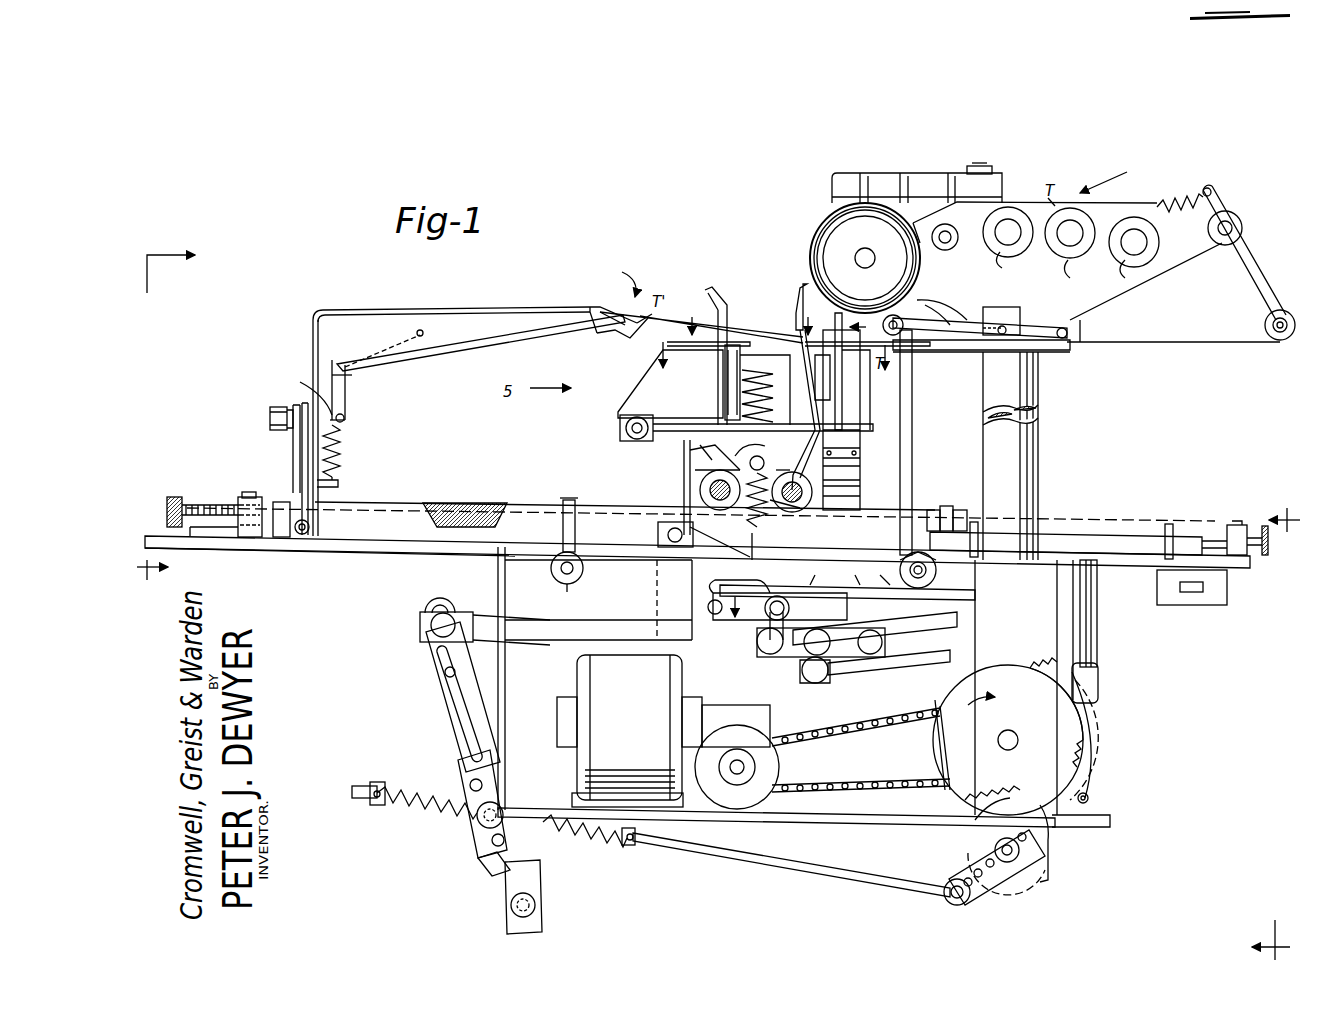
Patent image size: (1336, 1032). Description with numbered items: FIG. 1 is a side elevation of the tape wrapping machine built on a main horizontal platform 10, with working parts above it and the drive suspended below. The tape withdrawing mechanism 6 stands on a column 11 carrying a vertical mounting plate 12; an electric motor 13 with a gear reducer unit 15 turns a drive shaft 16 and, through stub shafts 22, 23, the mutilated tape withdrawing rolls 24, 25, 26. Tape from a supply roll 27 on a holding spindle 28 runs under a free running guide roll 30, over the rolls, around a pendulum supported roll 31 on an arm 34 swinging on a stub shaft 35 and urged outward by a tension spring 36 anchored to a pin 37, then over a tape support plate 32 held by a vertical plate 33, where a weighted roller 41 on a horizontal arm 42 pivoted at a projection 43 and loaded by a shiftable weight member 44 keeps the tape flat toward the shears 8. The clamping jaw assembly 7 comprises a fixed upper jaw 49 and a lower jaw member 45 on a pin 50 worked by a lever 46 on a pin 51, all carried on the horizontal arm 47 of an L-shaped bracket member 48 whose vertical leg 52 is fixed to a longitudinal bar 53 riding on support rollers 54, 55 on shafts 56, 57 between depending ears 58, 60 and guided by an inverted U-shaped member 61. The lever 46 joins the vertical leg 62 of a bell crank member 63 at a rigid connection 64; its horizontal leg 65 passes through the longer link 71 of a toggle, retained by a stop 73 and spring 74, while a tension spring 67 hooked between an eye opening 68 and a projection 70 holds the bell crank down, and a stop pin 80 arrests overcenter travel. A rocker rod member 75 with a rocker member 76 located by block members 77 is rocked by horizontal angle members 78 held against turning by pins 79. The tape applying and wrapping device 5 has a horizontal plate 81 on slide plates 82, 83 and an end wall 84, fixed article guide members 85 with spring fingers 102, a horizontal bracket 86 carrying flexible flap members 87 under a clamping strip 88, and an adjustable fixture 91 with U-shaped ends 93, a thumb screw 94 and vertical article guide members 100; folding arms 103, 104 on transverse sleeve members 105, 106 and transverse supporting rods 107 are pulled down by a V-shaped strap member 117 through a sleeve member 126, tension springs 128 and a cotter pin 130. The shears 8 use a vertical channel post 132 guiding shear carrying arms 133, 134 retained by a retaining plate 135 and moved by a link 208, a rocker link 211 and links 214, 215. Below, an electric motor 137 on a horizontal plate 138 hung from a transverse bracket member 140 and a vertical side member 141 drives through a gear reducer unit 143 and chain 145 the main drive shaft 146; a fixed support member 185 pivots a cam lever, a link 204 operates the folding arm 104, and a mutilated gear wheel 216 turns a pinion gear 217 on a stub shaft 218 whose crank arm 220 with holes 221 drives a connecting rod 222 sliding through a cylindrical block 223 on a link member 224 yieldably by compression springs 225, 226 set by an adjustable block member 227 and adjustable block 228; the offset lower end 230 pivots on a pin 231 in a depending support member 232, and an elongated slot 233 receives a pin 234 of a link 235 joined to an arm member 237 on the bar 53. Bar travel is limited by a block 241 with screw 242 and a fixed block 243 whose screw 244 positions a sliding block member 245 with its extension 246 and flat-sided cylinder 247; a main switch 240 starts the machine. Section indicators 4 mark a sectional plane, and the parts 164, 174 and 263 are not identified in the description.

The section line 4- 4 is at (1281, 515).
The section line 5- 5 is at (171, 264).
The view arrow 6 is at (906, 248).
The view arrow 7 is at (753, 321).
The view arrow 8 is at (863, 329).
The bed plate 10 is at (285, 546).
The column 11 is at (1030, 438).
The frame plate 12 is at (1125, 290).
The roll frame 13 is at (832, 187).
The cap 15 is at (1000, 190).
The roller 16 is at (1012, 236).
The roller 22 is at (1072, 238).
The roller 23 is at (1138, 244).
The roller shaft 24 is at (1006, 266).
The roller shaft 25 is at (1074, 274).
The roller shaft 26 is at (1115, 273).
The supply roll 27 is at (848, 232).
The roll spindle 28 is at (858, 257).
The guide roller 30 is at (950, 226).
The pulley 31 is at (1264, 325).
The plate 32 is at (970, 358).
The post 33 is at (912, 447).
The arm 34 is at (1248, 262).
The pulley 35 is at (1243, 228).
The spring anchor 36 is at (1200, 192).
The spring 37 is at (1157, 205).
The pivot 41 is at (902, 317).
The guide 42 is at (945, 310).
The bar pivot 43 is at (1068, 331).
The block 44 is at (1020, 314).
The tape guide 45 is at (628, 338).
The arm 46 is at (560, 312).
The arm 47 is at (463, 309).
The post 48 is at (313, 316).
The guide 49 is at (595, 308).
The link 50 is at (600, 330).
The pivot 51 is at (422, 336).
The post 52 is at (313, 365).
The plate 53 is at (393, 548).
The shaft 54 is at (576, 578).
The bracket 55 is at (936, 568).
The hub 56 is at (560, 578).
The pulley 57 is at (936, 575).
The pulley 58 is at (551, 570).
The shaft 60 is at (936, 580).
The post 61 is at (565, 500).
The post 62 is at (346, 392).
The bar 63 is at (345, 421).
The bracket 64 is at (352, 375).
The hook 65 is at (302, 383).
The spring 67 is at (340, 458).
The pivot 68 is at (344, 418).
The spring seat 70 is at (338, 483).
The post 71 is at (300, 480).
The nut 73 is at (272, 428).
The washer 74 is at (290, 430).
The block 75 is at (470, 495).
The block 76 is at (946, 506).
The washers 77 is at (933, 510).
The bar 78 is at (1108, 535).
The posts 79 is at (976, 522).
The plate 80 is at (293, 460).
The lever 81 is at (688, 447).
The link 82 is at (695, 472).
The lever 83 is at (770, 462).
The post 84 is at (700, 452).
The rod 85 is at (800, 290).
The block 86 is at (816, 377).
The plate 87 is at (740, 345).
The post 88 is at (855, 371).
The block 91 is at (650, 368).
The roller 93 is at (620, 432).
The bar 94 is at (731, 445).
The guide rod 100 is at (718, 294).
The tape path 102 is at (797, 334).
The block 103 is at (860, 447).
The link 104 is at (668, 457).
The link 105 is at (790, 510).
The roller 106 is at (700, 490).
The roller 107 is at (708, 496).
The spring 117 is at (742, 380).
The link 126 is at (738, 452).
The roller 128 is at (750, 464).
The lever 130 is at (750, 538).
The block 132 is at (860, 414).
The plate 133 is at (860, 483).
The plate 134 is at (860, 500).
The plate 135 is at (860, 466).
The motor 137 is at (682, 672).
The base rail 138 is at (776, 818).
The frame 140 is at (505, 670).
The post 141 is at (1075, 645).
The pulley 143 is at (780, 765).
The belt 145 is at (862, 732).
The gear 146 is at (1018, 740).
The link 164 is at (766, 630).
The plunger 174 is at (726, 366).
The chain 185 is at (915, 700).
The link 204 is at (718, 620).
The bar 208 is at (843, 680).
The plate 211 is at (795, 658).
The lever 214 is at (816, 582).
The lever 215 is at (860, 576).
The band 216 is at (1073, 738).
The gear 217 is at (1015, 882).
The pivot 218 is at (998, 849).
The pivot 220 is at (975, 897).
The lever 221 is at (960, 877).
The rod 222 is at (780, 862).
The pivot 223 is at (478, 825).
The slotted lever 224 is at (464, 768).
The spring 225 is at (412, 816).
The spring 226 is at (598, 845).
The rod 227 is at (365, 805).
The block 228 is at (628, 846).
The link 230 is at (500, 870).
The pivot 231 is at (530, 906).
The block 232 is at (543, 930).
The pin 233 is at (445, 672).
The pivot block 234 is at (432, 625).
The plate 235 is at (582, 622).
The plate 237 is at (660, 580).
The switch box 240 is at (1195, 595).
The knob 241 is at (1245, 558).
The block 242 is at (1230, 525).
The block 243 is at (242, 495).
The knob 244 is at (186, 497).
The block 245 is at (281, 523).
The plate 246 is at (200, 536).
The pivot 247 is at (310, 527).
The bar 263 is at (875, 626).